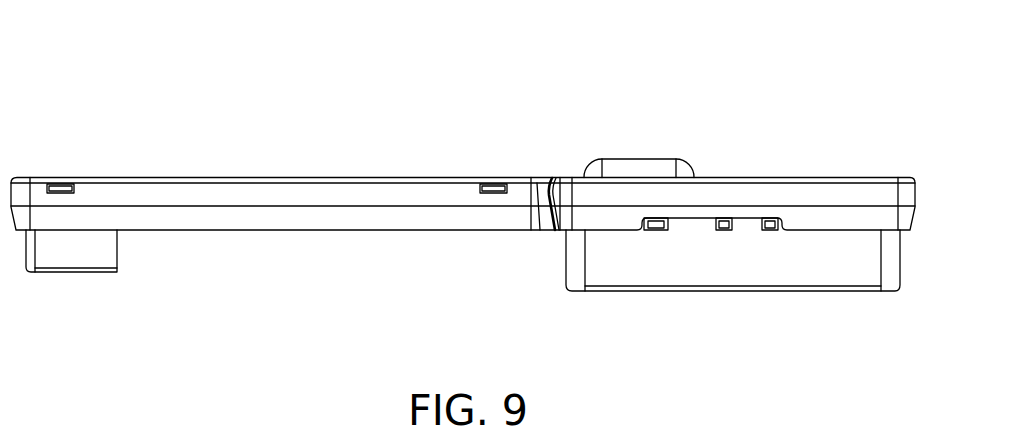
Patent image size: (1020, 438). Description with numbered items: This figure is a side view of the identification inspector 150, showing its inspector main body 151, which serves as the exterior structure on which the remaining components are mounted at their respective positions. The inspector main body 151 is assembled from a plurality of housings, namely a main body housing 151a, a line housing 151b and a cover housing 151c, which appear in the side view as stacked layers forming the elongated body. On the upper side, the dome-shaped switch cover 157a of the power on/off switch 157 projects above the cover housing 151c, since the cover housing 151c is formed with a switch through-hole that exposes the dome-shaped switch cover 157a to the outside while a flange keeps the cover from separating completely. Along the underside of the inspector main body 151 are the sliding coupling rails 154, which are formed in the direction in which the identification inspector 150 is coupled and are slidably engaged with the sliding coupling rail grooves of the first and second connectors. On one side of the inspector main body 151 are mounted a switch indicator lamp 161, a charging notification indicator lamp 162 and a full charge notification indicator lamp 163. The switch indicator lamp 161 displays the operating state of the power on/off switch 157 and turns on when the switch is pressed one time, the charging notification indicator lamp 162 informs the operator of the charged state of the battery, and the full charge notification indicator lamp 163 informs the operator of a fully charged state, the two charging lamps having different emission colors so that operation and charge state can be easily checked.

The identification inspector 150 is at (122, 46).
The inspector main body 151 is at (226, 170).
The main body housing 151a is at (868, 278).
The line housing 151b is at (377, 222).
The cover housing 151c is at (332, 185).
The sliding coupling rails 154 is at (75, 259).
The power on/off switch 157 is at (597, 150).
The dome-shaped switch cover 157a is at (655, 165).
The switch indicator lamp 161 is at (662, 232).
The charging notification indicator lamp 162 is at (728, 232).
The full charge notification indicator lamp 163 is at (773, 232).